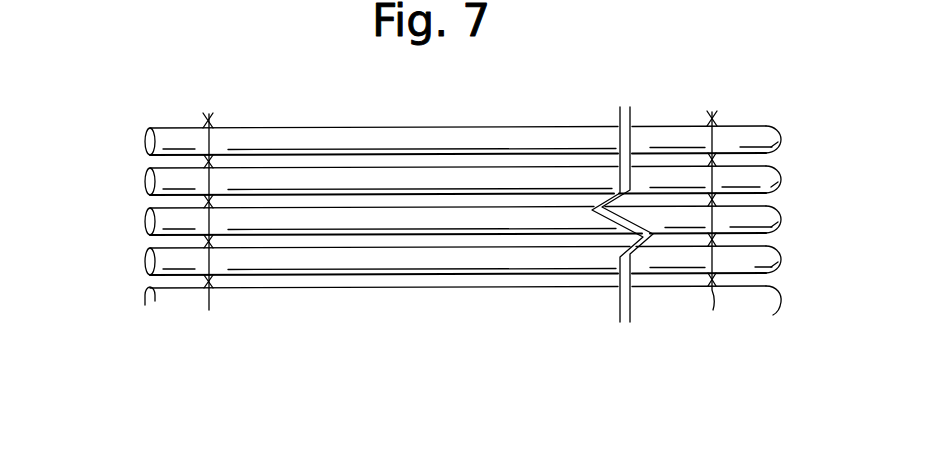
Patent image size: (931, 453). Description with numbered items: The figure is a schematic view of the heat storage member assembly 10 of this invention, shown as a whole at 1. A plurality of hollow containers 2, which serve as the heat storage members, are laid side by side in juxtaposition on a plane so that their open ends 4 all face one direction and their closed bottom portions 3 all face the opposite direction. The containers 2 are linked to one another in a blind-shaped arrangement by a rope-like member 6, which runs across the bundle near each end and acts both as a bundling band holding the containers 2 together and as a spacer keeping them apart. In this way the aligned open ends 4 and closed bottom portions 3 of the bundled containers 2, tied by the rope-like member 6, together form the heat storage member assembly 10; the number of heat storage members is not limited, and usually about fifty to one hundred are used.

The tube assembly 1 is at (466, 122).
The hollow container 2 is at (551, 151).
The closed bottom portion 3 is at (781, 145).
The open end 4 is at (146, 256).
The rope-like member 6 is at (212, 297).
The heat storage member assembly 10 is at (100, 125).